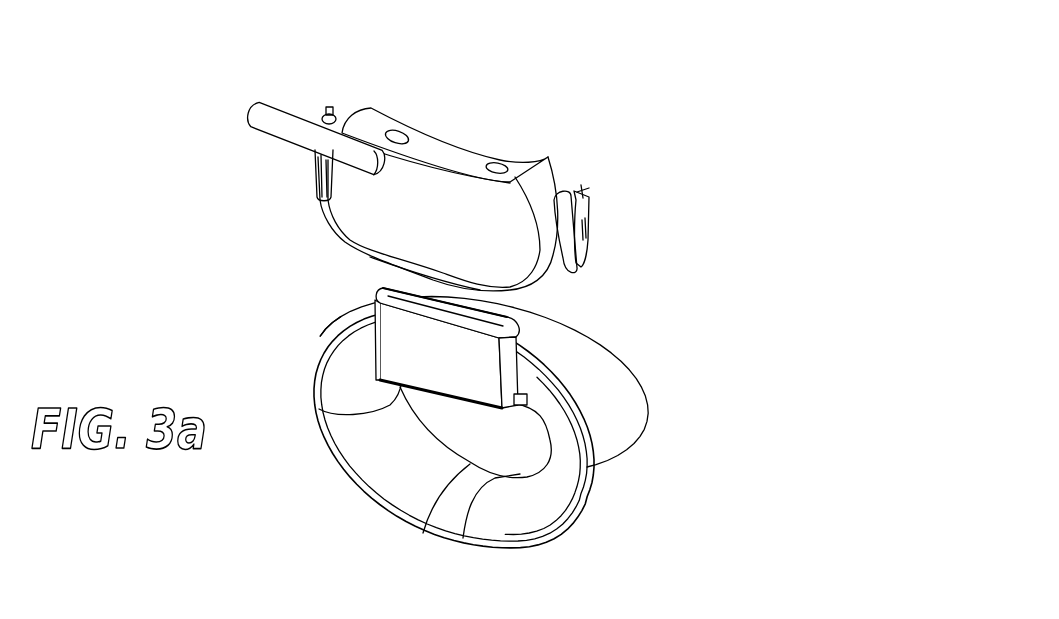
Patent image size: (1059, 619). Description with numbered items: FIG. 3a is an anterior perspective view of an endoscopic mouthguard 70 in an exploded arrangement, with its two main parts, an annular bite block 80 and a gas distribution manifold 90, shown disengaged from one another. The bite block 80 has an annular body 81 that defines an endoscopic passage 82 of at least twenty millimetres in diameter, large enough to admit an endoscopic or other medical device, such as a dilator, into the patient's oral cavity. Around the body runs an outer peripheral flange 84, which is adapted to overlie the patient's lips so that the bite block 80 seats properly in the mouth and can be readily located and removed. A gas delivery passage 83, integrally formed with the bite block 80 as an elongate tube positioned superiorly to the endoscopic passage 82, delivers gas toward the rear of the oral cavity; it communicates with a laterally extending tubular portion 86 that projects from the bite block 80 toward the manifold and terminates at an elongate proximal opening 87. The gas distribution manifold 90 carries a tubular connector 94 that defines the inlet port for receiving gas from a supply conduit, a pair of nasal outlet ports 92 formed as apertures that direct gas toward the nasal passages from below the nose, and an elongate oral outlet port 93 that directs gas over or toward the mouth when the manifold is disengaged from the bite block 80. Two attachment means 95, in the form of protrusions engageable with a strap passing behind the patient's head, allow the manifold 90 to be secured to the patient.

The endoscopic mouthguard 70 is at (657, 332).
The annular bite block 80 is at (516, 409).
The annular body 81 is at (600, 428).
The endoscopic passage 82 is at (470, 425).
The gas delivery passage 83 is at (527, 397).
The outer peripheral flange 84 is at (579, 513).
The tubular portion 86 is at (523, 337).
The proximal opening 87 is at (320, 340).
The gas distribution manifold 90 is at (472, 169).
The nasal outlet ports 92 is at (403, 134).
The oral outlet port 93 is at (400, 268).
The tubular connector 94 is at (280, 132).
The attachment means 95 is at (327, 108).